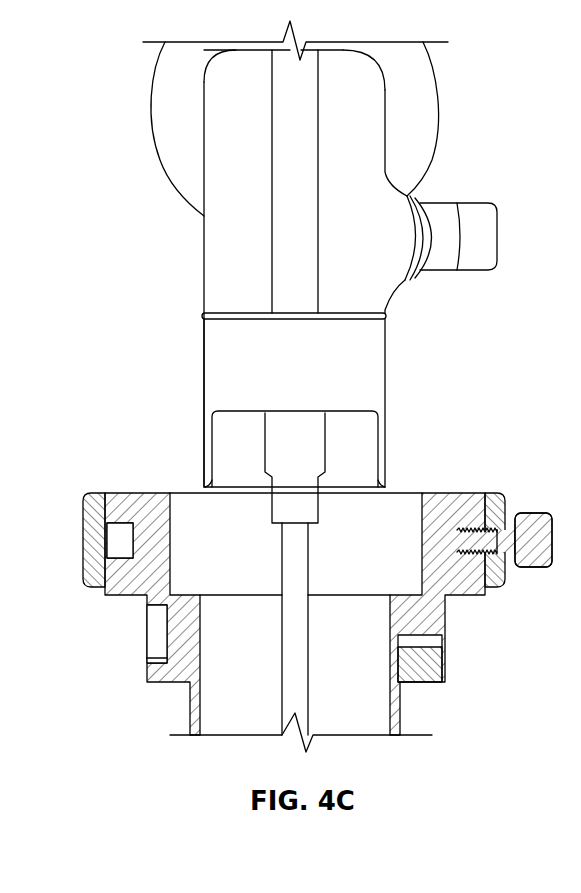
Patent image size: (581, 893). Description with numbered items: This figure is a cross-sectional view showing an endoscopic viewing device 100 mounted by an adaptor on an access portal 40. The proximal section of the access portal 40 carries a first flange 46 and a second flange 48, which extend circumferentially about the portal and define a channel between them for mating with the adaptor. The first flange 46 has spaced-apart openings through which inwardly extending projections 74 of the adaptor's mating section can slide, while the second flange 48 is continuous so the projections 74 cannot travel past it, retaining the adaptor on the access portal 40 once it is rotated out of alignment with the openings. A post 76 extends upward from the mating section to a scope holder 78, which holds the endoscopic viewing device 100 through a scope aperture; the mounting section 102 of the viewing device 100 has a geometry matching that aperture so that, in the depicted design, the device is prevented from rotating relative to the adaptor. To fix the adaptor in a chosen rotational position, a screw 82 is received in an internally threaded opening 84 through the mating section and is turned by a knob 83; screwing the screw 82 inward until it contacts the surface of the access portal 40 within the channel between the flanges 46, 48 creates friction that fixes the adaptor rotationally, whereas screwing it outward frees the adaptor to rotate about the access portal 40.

The endoscopic viewing device 100 is at (172, 145).
The scope holder 78 is at (362, 347).
The post 76 is at (363, 473).
The mounting section 102 is at (320, 451).
The first flange 46 is at (120, 500).
The projections 74 is at (117, 537).
The second flange 48 is at (128, 587).
The screw 82 is at (492, 546).
The knob 83 is at (534, 558).
The opening 84 is at (508, 530).
The access portal 40 is at (393, 725).